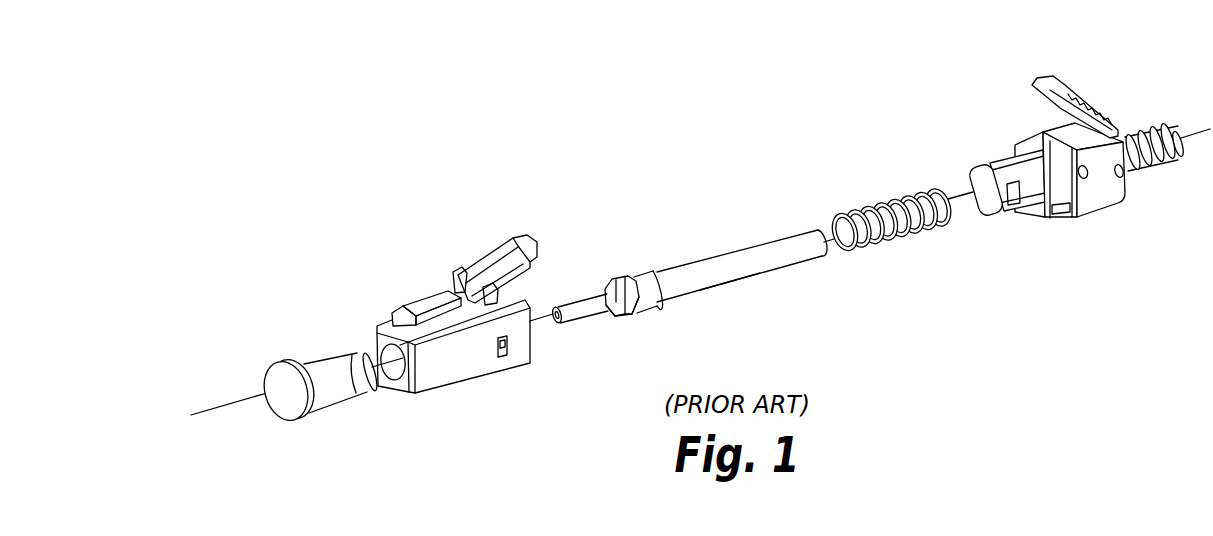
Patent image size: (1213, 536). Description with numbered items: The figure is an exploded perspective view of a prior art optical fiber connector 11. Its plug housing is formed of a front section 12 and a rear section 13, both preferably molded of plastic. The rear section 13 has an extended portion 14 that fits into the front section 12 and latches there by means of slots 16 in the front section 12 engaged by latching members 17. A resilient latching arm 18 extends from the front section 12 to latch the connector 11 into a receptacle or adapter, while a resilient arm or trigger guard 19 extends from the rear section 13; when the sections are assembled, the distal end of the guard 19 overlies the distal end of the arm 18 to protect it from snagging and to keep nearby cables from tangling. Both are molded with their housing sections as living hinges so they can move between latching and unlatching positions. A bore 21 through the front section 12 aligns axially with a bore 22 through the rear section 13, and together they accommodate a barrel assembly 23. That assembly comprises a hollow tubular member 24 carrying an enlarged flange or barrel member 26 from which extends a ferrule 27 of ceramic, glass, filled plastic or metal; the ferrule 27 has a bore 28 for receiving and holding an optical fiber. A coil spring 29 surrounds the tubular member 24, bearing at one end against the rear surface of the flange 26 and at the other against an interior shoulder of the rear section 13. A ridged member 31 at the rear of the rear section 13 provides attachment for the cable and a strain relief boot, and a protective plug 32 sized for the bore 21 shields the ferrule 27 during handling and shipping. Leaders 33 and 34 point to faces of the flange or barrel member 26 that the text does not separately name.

The connector 11 is at (669, 129).
The front section 12 is at (447, 377).
The rear section 13 is at (1092, 193).
The extended portion 14 is at (1000, 157).
The slots 16 is at (502, 357).
The latching members 17 is at (1015, 198).
The resilient latching arm 18 is at (498, 258).
The trigger guard 19 is at (1054, 78).
The bore 21 is at (393, 376).
The bore 22 is at (972, 176).
The barrel assembly 23 is at (740, 278).
The hollow tubular member 24 is at (777, 250).
The flange 26 is at (623, 278).
The ferrule 27 is at (585, 297).
The bore 28 is at (558, 320).
The coil spring 29 is at (882, 203).
The ridged member 31 is at (1168, 126).
The protective plug 32 is at (280, 377).
The nut facet 33 is at (637, 311).
The nut facet 34 is at (618, 314).